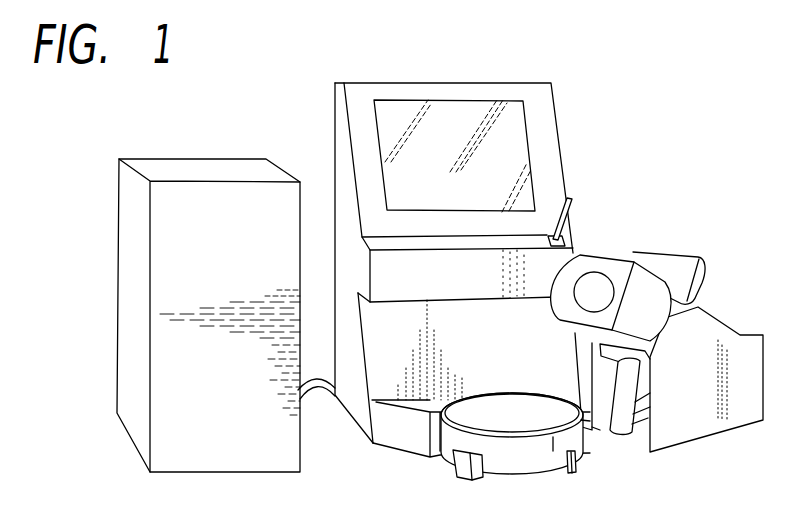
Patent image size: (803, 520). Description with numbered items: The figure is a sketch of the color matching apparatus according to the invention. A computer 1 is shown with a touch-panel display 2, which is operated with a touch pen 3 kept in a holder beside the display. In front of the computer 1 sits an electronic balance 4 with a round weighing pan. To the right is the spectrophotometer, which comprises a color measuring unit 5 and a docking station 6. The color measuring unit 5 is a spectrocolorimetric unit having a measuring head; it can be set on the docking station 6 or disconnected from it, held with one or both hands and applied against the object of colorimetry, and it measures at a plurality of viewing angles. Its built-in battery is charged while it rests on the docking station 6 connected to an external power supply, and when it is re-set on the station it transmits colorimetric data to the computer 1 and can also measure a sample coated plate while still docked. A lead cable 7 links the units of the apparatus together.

The computer 1 is at (180, 170).
The touch-panel display 2 is at (455, 112).
The touch pen 3 is at (567, 202).
The electronic balance 4 is at (503, 403).
The color measuring unit 5 is at (590, 262).
The docking station 6 is at (693, 329).
The lead cable 7 is at (307, 392).